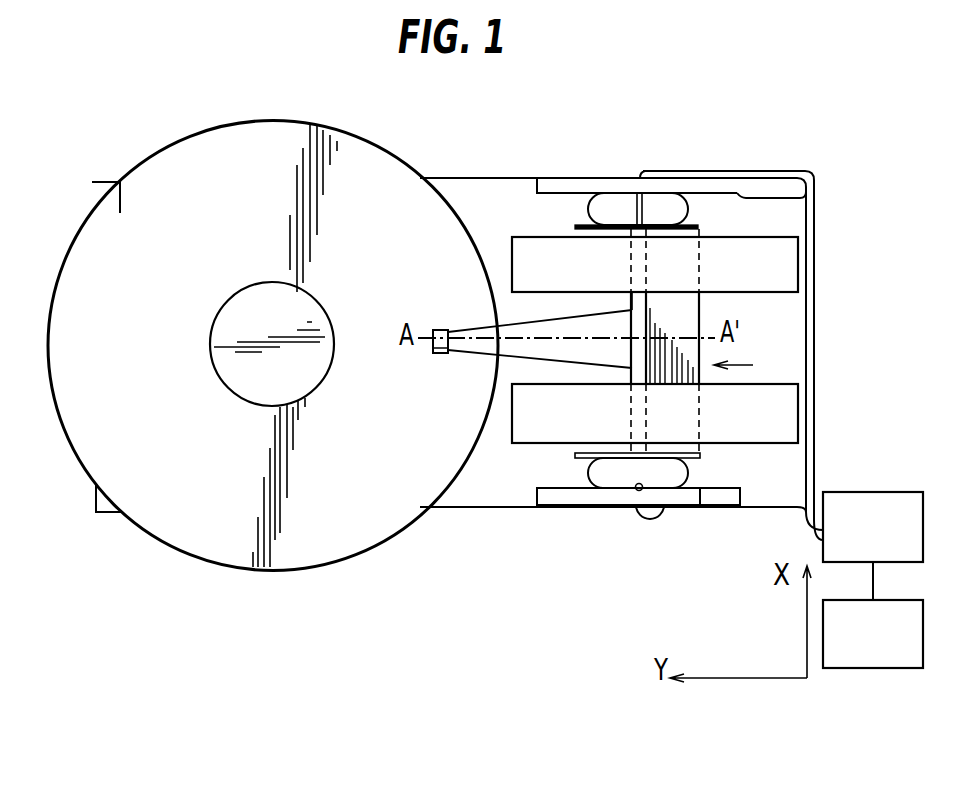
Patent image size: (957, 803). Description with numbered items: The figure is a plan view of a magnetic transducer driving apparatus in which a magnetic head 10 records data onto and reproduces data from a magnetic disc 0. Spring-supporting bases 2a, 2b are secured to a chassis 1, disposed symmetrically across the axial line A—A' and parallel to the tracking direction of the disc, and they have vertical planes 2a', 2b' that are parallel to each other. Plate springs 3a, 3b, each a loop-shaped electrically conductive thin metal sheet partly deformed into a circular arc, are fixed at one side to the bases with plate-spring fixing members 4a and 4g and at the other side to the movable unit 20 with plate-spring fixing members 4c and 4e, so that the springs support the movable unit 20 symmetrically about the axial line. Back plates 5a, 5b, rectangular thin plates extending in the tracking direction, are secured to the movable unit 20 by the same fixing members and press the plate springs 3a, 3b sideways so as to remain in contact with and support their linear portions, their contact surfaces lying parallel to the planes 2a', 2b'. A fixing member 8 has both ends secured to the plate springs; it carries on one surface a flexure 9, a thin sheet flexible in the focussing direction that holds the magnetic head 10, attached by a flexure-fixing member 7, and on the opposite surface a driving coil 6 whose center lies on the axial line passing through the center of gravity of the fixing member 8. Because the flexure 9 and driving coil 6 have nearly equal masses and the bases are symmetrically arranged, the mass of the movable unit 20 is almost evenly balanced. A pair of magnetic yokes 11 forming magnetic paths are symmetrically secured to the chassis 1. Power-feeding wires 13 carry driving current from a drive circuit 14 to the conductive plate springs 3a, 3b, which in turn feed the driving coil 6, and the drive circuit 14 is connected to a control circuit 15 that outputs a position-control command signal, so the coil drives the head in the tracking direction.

The magnetic disc 0 is at (311, 125).
The chassis 1 is at (488, 490).
The spring-supporting base 2a is at (726, 542).
The vertical plane 2a' is at (805, 380).
The spring-supporting base 2b is at (727, 155).
The vertical plane 2b' is at (839, 206).
The plate spring 3a is at (687, 490).
The plate spring 3b is at (694, 193).
The plate-spring fixing member 4a is at (638, 490).
The plate-spring fixing member 4c is at (622, 460).
The plate-spring fixing member 4e is at (638, 224).
The plate-spring fixing member 4g is at (640, 193).
The back plate 5a is at (585, 475).
The back plate 5b is at (610, 220).
The driving coil 6 is at (693, 318).
The flexure-fixing member 7 is at (630, 337).
The fixing member 8 is at (640, 300).
The flexure 9 is at (438, 355).
The magnetic head 10 is at (433, 352).
The magnetic yokes 11 is at (783, 400).
The power-feeding wires 13 is at (813, 490).
The drive circuit 14 is at (898, 490).
The control circuit 15 is at (853, 670).
The movable unit 20 is at (790, 370).